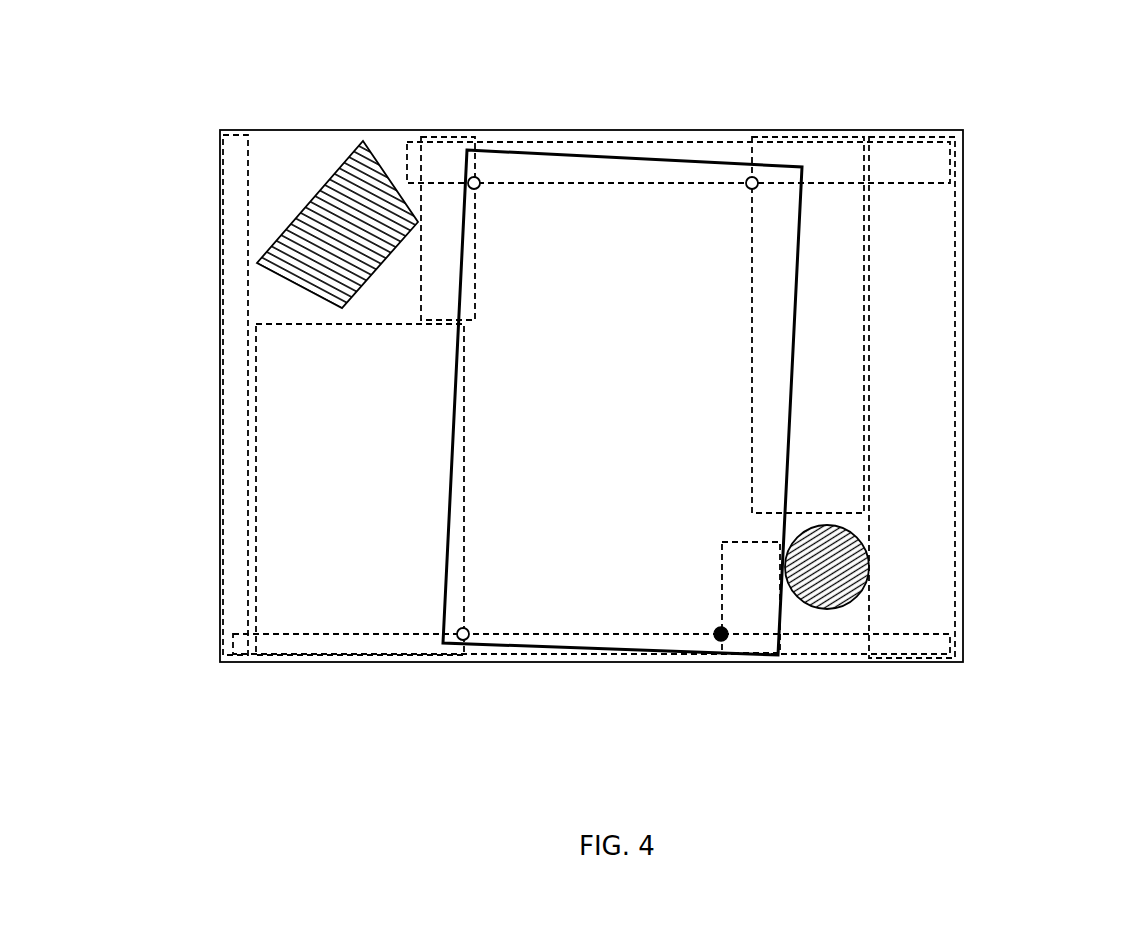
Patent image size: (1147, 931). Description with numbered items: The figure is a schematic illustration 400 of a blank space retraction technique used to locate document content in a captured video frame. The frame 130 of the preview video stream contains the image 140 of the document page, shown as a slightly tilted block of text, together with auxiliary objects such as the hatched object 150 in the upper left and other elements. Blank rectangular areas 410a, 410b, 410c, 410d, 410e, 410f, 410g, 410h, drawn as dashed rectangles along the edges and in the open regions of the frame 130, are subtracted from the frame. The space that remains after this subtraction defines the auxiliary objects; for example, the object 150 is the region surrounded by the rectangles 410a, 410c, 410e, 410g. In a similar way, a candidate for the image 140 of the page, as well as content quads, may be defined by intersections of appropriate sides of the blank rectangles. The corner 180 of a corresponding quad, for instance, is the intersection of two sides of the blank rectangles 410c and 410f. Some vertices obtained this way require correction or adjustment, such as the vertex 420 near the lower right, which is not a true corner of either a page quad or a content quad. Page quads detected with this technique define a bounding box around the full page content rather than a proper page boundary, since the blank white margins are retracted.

The schematic illustration 400 is at (1112, 95).
The frame 130 is at (213, 508).
The image of the document page 140 is at (558, 267).
The auxiliary object 150 is at (277, 228).
The corner 180 is at (757, 177).
The blank rectangular area 410a is at (233, 325).
The blank rectangular area 410b is at (937, 317).
The blank rectangular area 410c is at (717, 152).
The blank rectangular area 410d is at (383, 646).
The blank rectangular area 410e is at (275, 457).
The blank rectangular area 410f is at (846, 371).
The blank rectangular area 410g is at (459, 211).
The blank rectangular area 410h is at (768, 586).
The vertex 420 is at (728, 640).